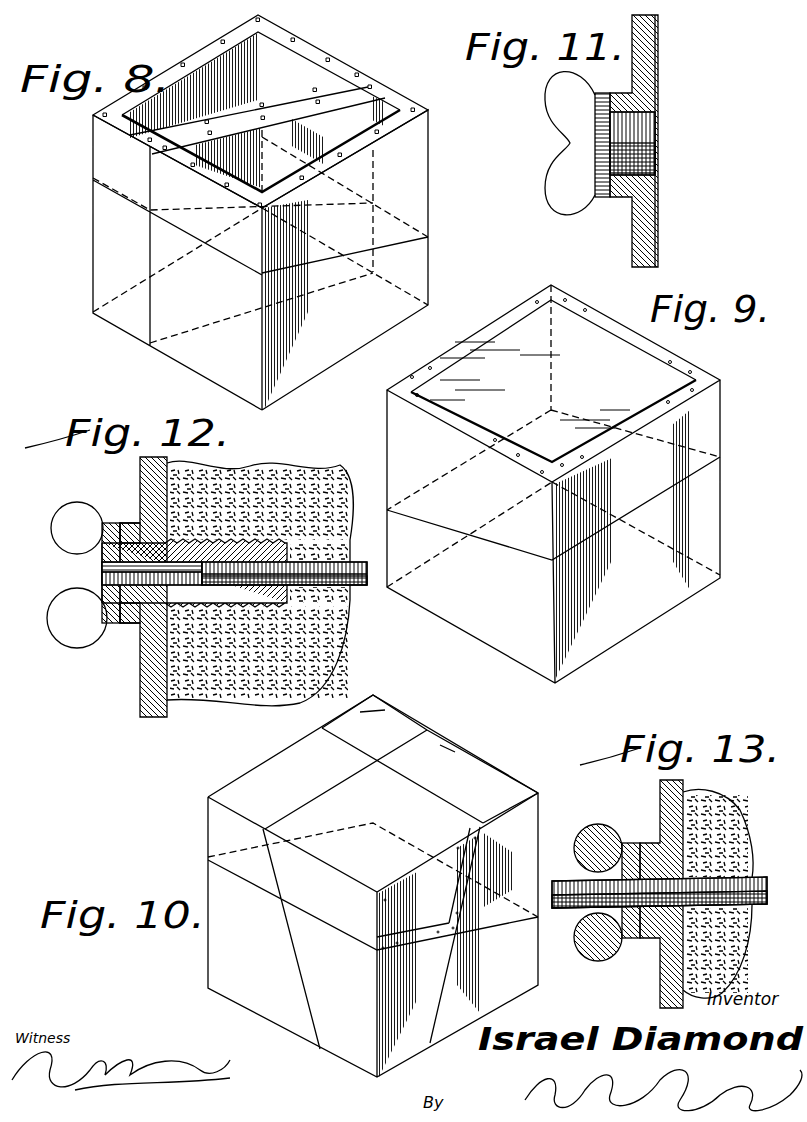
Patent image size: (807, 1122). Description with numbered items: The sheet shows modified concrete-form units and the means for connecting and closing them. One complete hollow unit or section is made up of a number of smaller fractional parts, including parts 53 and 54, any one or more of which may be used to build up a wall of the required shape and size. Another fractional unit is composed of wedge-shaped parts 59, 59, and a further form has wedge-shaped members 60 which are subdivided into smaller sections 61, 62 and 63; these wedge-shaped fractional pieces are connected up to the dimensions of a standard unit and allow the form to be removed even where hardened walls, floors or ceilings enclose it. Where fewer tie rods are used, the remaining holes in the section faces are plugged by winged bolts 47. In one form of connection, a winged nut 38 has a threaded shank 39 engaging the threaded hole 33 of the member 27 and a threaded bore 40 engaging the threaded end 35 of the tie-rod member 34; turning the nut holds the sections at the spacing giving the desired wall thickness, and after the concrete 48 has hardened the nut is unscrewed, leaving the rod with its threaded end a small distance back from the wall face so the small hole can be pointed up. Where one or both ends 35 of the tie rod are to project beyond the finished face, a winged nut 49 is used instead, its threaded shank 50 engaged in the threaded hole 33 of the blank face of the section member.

In FIG. 11, the member 27 is at (647, 67).
In FIG. 12, the member 27 is at (140, 480).
In FIG. 13, the member 27 is at (658, 808).
In FIG. 12, the threaded hole 33 is at (136, 526).
In FIG. 13, the threaded hole 33 is at (667, 860).
In FIG. 12, the member 34 is at (366, 588).
In FIG. 13, the member 34 is at (747, 887).
In FIG. 12, the threaded end 35 is at (297, 567).
In FIG. 13, the threaded end 35 is at (562, 880).
In FIG. 12, the winged nut 38 is at (83, 540).
In FIG. 12, the threaded shank 39 is at (137, 605).
In FIG. 12, the threaded bore 40 is at (192, 610).
In FIG. 11, the winged bolt 47 is at (645, 133).
In FIG. 12, the concrete 48 is at (223, 680).
In FIG. 13, the concrete 48 is at (722, 833).
In FIG. 13, the winged nut 49 is at (590, 960).
In FIG. 13, the threaded shank 50 is at (658, 945).
In FIG. 8, the fractional part 53 is at (345, 260).
In FIG. 8, the fractional part 54 is at (113, 267).
In FIG. 9, the wedge-shaped part 59 is at (553, 484).
In FIG. 10, the wedge-shaped member 60 is at (373, 935).
In FIG. 10, the smaller section 61 is at (373, 762).
In FIG. 10, the smaller section 62 is at (438, 765).
In FIG. 10, the smaller section 63 is at (373, 722).